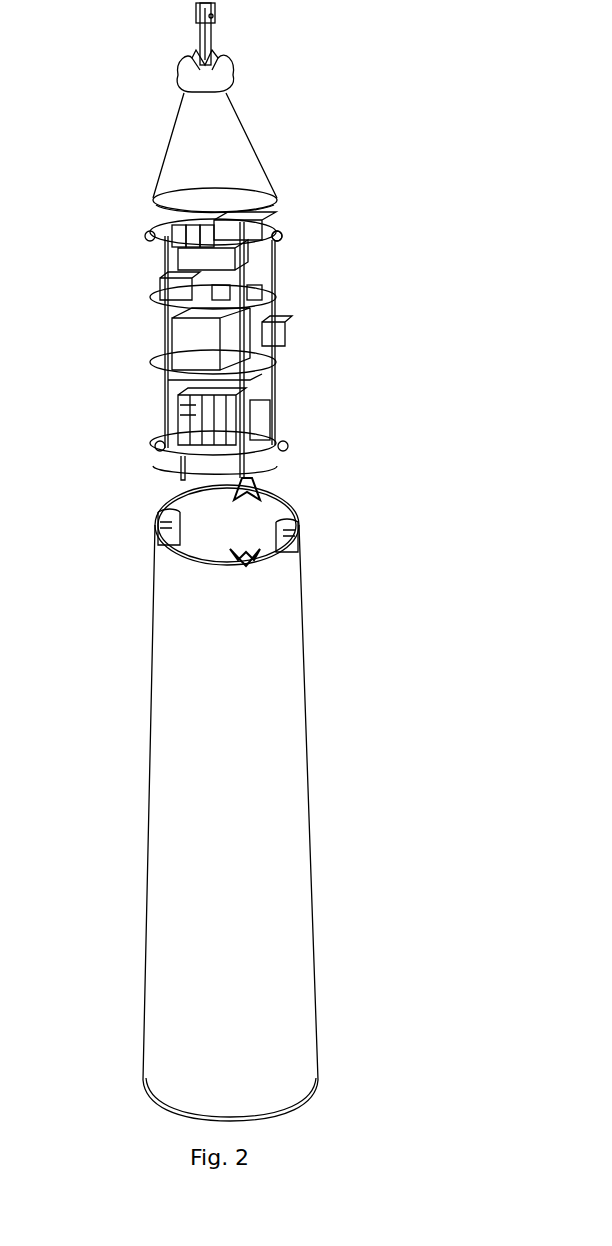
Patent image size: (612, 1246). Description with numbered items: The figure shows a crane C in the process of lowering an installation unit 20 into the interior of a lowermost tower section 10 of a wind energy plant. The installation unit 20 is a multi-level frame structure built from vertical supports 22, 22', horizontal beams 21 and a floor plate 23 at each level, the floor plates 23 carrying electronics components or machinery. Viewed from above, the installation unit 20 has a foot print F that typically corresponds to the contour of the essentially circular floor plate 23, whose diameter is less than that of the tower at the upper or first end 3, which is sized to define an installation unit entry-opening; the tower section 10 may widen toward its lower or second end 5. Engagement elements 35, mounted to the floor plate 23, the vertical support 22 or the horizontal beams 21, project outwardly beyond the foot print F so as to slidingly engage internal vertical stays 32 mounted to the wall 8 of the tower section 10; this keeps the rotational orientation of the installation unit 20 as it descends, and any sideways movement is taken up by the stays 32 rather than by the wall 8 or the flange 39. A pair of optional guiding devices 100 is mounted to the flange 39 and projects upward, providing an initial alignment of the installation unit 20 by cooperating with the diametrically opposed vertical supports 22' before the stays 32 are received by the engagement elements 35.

The crane C is at (235, 62).
The engagement elements 35 is at (282, 236).
The vertical support 22 is at (177, 241).
The vertical support 22' is at (319, 291).
The floor plate 23 is at (165, 312).
The horizontal beams 21 is at (165, 428).
The installation unit 20 is at (318, 320).
The foot print F is at (268, 466).
The first end 3 is at (290, 493).
The vertical stays 32 is at (160, 522).
The flange 39 is at (297, 547).
The installation module guiding device 100 is at (246, 564).
The tower section 10 is at (345, 873).
The wall 8 is at (242, 1001).
The second end 5 is at (170, 1108).